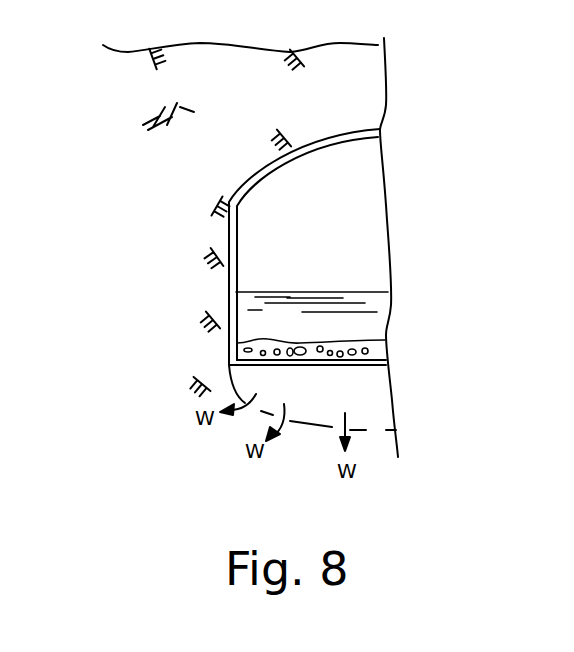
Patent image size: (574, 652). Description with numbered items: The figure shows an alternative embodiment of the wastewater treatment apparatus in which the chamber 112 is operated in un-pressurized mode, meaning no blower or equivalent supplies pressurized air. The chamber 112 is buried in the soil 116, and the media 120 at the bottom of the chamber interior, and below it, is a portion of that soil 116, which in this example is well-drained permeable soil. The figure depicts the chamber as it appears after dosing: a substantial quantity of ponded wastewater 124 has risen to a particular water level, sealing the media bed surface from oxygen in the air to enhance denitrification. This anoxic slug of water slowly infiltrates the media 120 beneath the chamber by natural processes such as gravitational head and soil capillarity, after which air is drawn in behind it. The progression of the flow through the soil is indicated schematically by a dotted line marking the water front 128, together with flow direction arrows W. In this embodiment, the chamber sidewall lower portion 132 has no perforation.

The chamber 112 is at (216, 266).
The soil 116 is at (188, 97).
The media 120 is at (363, 396).
The ponded wastewater 124 is at (361, 331).
The water front 128 is at (313, 427).
The chamber sidewall lower portion 132 is at (214, 185).